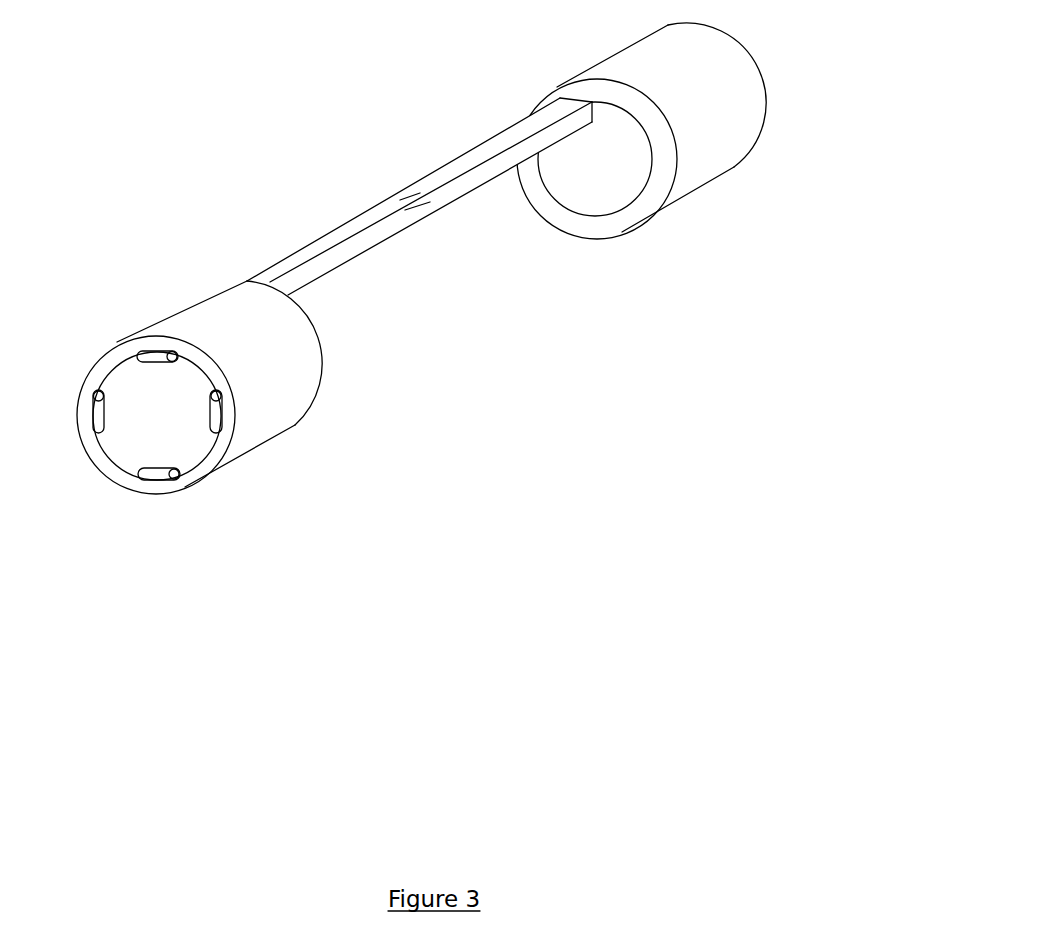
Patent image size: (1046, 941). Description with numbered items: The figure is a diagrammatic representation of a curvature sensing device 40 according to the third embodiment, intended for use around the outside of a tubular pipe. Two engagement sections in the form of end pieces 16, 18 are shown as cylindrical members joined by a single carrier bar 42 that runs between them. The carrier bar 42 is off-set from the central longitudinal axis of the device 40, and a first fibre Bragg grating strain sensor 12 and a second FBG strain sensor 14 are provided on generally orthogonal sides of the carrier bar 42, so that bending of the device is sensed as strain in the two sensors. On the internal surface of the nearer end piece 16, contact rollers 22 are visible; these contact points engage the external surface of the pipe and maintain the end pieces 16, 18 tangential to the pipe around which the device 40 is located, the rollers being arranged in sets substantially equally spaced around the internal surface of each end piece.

The curvature sensing device 40 is at (405, 275).
The first fibre Bragg grating strain sensor 12 is at (419, 208).
The second FBG strain sensor 14 is at (422, 216).
The carrier bar 42 is at (485, 175).
The end piece 16 is at (183, 416).
The end piece 18 is at (716, 155).
The contact rollers 22 is at (96, 427).